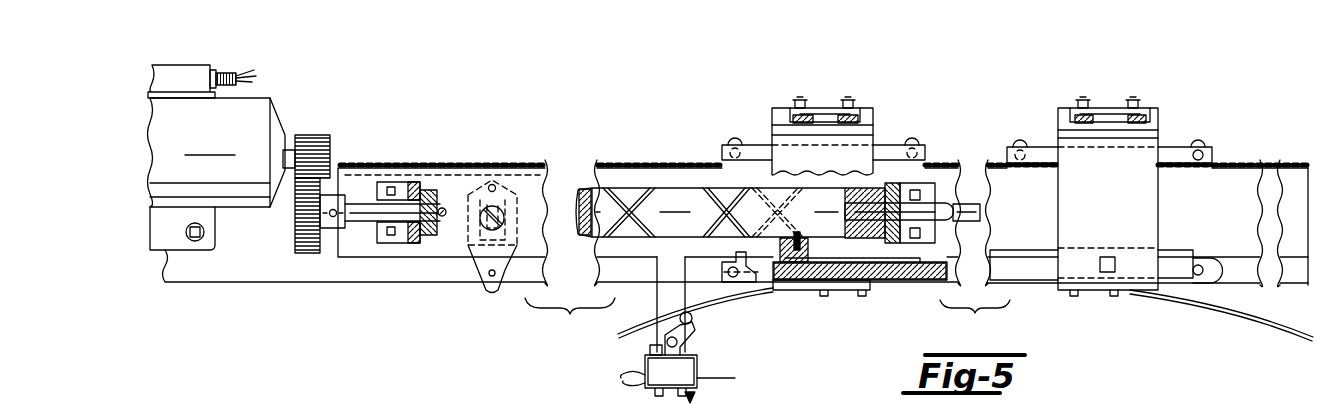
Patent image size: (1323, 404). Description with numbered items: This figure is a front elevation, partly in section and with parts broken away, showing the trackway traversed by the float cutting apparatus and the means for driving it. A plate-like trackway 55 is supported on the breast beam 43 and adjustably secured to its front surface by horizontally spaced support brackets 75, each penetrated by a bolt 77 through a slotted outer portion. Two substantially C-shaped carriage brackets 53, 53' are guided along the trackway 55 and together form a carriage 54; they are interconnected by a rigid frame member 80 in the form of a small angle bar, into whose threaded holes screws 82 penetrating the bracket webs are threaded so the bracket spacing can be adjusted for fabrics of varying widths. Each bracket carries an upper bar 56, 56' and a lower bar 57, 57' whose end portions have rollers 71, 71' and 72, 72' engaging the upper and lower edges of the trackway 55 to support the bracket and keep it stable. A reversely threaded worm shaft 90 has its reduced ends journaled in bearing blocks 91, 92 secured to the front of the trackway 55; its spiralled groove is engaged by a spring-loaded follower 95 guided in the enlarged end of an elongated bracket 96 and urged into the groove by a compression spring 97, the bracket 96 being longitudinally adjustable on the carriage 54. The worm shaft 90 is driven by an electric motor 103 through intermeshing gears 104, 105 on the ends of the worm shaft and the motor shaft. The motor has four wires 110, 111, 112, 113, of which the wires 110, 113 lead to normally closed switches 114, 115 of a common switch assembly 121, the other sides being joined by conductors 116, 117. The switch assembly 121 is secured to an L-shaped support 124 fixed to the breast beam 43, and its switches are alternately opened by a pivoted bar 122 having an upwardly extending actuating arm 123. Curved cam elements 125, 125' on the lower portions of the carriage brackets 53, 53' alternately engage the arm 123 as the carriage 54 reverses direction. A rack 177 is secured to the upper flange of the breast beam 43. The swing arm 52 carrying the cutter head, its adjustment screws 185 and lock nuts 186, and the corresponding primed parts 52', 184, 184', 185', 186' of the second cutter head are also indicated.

The breast beam 43 is at (547, 276).
The swing arm 52 is at (641, 241).
The sensor 52' is at (1110, 102).
The carriage bracket 53 is at (859, 217).
The carriage bracket 53' is at (1108, 202).
The carriage 54 is at (1168, 132).
The trackway 55 is at (530, 249).
The elongated bar 56 is at (757, 133).
The roller 56' is at (1041, 125).
The bar 57 is at (723, 267).
The follower bracket 57' is at (1217, 270).
The roller 71 is at (822, 141).
The roller bracket 71' is at (1117, 143).
The roller 72 is at (727, 283).
The pivot 72' is at (1213, 284).
The support bracket 75 is at (480, 282).
The bolt 77 is at (472, 236).
The rigid frame member 80 is at (885, 290).
The screw 82 is at (1118, 240).
The worm shaft 90 is at (682, 178).
The bearing block 91 is at (924, 244).
The bearing block 92 is at (430, 244).
The spring-loaded follower 95 is at (790, 243).
The elongated bracket 96 is at (782, 250).
The compression spring 97 is at (802, 255).
The electric motor 103 is at (268, 112).
The gear 104 is at (328, 145).
The gear 105 is at (297, 240).
The wire 110 is at (240, 73).
The wire 111 is at (255, 72).
The wire 112 is at (250, 77).
The wire 113 is at (264, 86).
The switch 114 is at (650, 349).
The switch 115 is at (697, 363).
The conductor 116 is at (622, 386).
The conductor 117 is at (738, 383).
The switch assembly 121 is at (722, 397).
The pivoted bar 122 is at (690, 340).
The actuating arm 123 is at (693, 322).
The L-shaped support 124 is at (655, 306).
The cam element 125 is at (695, 313).
The cam element 125' is at (1221, 315).
The rack 177 is at (589, 164).
The sensor element 184 is at (764, 102).
The sensor element 184' is at (1177, 103).
The adjustment screw 185 is at (835, 83).
The terminal 185' is at (1104, 91).
The lock nut 186 is at (831, 91).
The lead 186' is at (1102, 78).